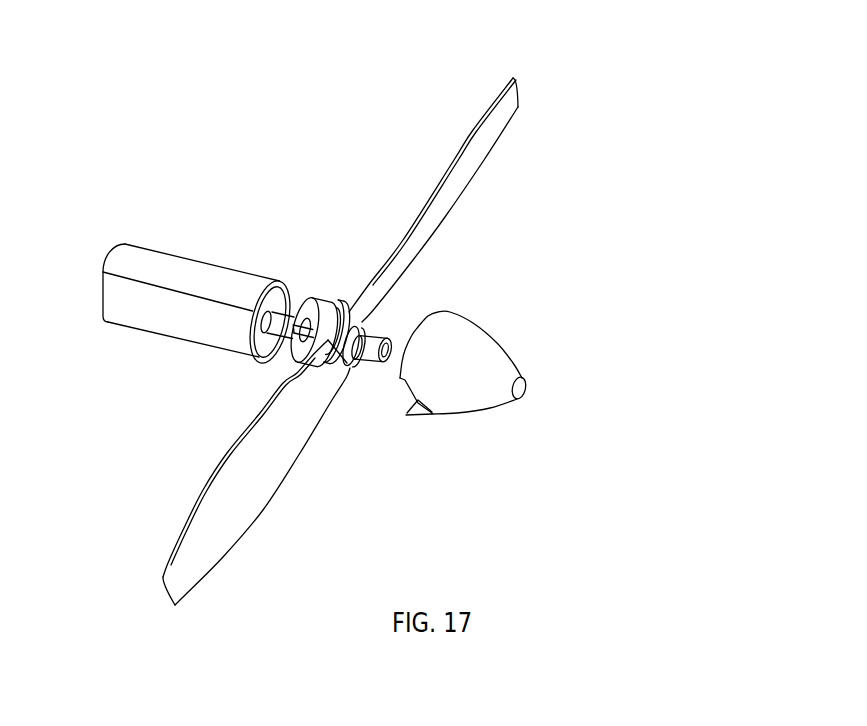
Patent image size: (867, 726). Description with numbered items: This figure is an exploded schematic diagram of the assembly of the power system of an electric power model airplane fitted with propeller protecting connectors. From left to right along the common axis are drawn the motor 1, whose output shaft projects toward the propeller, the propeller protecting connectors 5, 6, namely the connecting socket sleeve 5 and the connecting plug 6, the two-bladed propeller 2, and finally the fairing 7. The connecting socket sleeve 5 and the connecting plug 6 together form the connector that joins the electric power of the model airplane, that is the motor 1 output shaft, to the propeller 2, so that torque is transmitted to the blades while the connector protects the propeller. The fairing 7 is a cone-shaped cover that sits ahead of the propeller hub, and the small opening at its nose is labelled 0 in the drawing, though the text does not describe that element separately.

The motor 1 is at (200, 298).
The propeller 2 is at (340, 341).
The connecting socket sleeve 5 is at (312, 298).
The connecting plug 6 is at (334, 296).
The fairing 7 is at (516, 322).
The spinner nose opening 0 is at (571, 314).